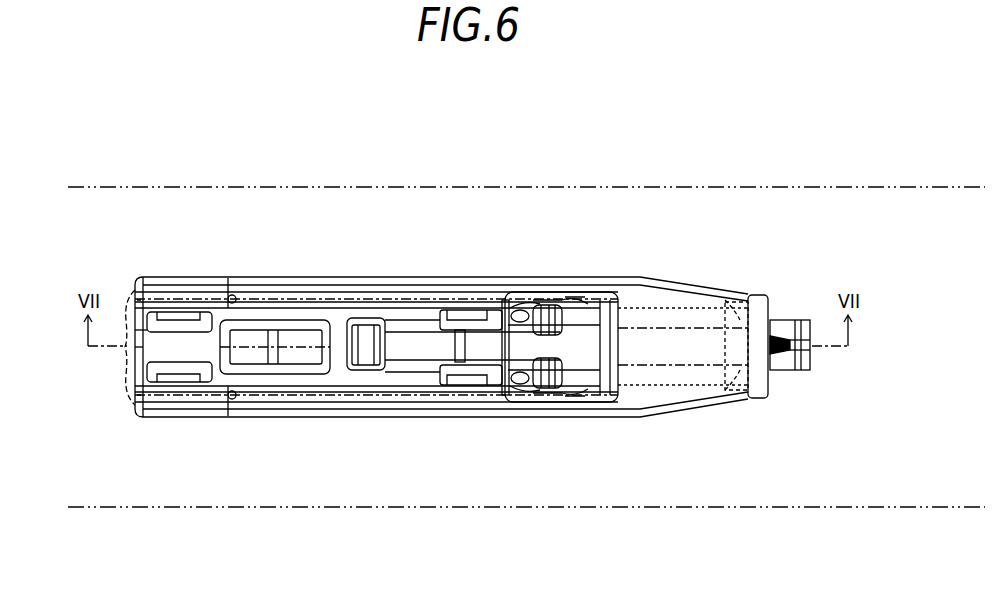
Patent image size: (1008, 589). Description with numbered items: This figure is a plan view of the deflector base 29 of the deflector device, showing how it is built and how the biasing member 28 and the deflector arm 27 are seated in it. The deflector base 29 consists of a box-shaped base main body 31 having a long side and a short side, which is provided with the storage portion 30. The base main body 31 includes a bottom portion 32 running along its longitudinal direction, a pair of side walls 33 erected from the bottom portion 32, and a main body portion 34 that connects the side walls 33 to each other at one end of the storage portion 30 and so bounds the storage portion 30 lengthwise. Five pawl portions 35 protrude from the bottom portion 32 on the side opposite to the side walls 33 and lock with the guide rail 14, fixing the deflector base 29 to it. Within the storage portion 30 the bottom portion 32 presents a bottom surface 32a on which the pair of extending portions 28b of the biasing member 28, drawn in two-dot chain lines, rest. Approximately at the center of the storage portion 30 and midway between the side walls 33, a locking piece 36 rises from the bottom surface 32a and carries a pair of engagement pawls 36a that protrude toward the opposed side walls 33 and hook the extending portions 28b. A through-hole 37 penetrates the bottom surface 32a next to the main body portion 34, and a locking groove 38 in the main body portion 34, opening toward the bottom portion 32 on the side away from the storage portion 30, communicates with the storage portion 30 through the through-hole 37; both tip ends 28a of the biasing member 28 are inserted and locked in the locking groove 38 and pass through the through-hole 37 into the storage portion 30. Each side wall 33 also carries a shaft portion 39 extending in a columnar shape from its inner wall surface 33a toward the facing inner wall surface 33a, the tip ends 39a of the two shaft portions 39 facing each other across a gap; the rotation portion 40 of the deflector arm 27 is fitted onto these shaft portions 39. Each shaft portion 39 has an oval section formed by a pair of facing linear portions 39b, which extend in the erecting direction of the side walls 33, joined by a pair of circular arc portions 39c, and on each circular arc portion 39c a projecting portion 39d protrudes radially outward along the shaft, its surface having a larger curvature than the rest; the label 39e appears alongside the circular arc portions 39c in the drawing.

The guide rail 14 is at (641, 186).
The deflector base 29 is at (714, 206).
The biasing member 28 is at (441, 347).
The tip ends 28a is at (755, 320).
The extending portions 28b is at (136, 290).
The deflector arm 27 is at (325, 418).
The storage portion 30 is at (424, 292).
The base main body 31 is at (690, 280).
The bottom portion 32 is at (140, 365).
The bottom surface 32a is at (139, 347).
The side walls 33 is at (254, 290).
The inner wall surfaces 33a is at (232, 295).
The main body portion 34 is at (668, 404).
The pawl portions 35 is at (190, 312).
The locking piece 36 is at (360, 358).
The engagement pawls 36a is at (370, 318).
The through-hole 37 is at (518, 396).
The locking groove 38 is at (738, 402).
The shaft portions 39 is at (566, 306).
The tip ends 39a is at (462, 348).
The linear portions 39b is at (522, 312).
The circular arc portions 39c is at (580, 300).
The projecting portion 39d is at (546, 300).
The clip arm tip 39e is at (575, 346).
The rotation portion 40 is at (618, 300).